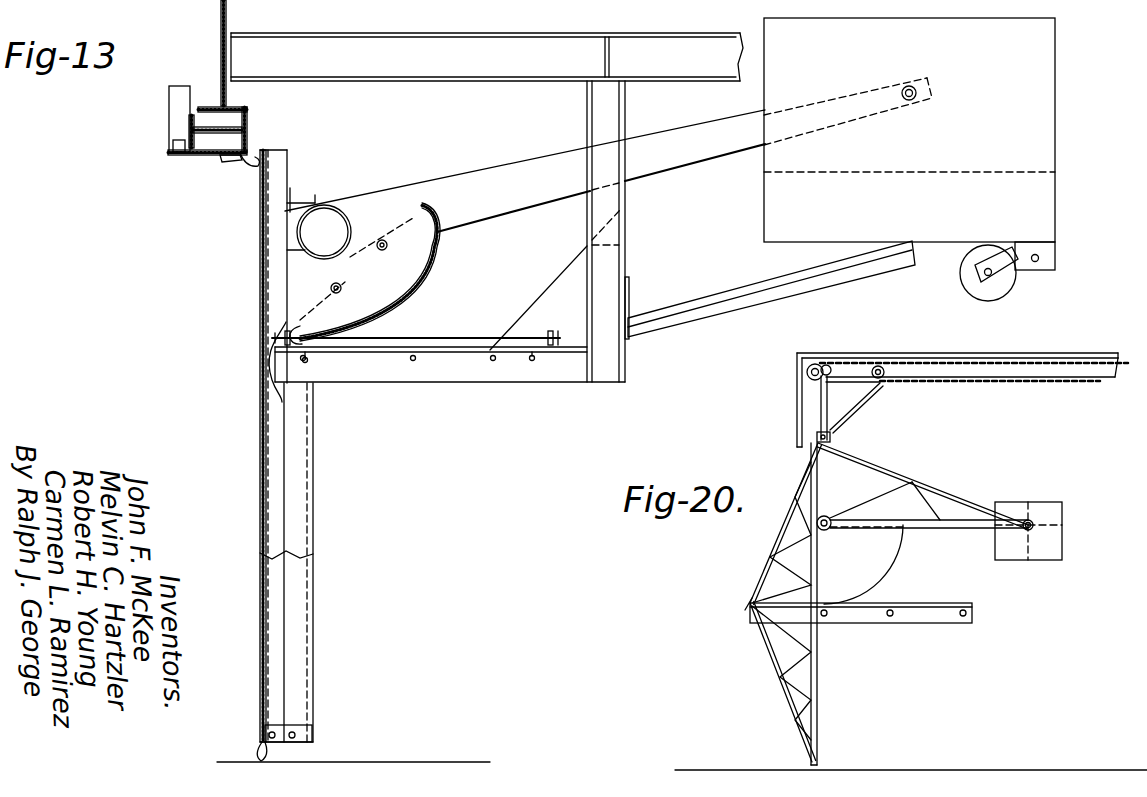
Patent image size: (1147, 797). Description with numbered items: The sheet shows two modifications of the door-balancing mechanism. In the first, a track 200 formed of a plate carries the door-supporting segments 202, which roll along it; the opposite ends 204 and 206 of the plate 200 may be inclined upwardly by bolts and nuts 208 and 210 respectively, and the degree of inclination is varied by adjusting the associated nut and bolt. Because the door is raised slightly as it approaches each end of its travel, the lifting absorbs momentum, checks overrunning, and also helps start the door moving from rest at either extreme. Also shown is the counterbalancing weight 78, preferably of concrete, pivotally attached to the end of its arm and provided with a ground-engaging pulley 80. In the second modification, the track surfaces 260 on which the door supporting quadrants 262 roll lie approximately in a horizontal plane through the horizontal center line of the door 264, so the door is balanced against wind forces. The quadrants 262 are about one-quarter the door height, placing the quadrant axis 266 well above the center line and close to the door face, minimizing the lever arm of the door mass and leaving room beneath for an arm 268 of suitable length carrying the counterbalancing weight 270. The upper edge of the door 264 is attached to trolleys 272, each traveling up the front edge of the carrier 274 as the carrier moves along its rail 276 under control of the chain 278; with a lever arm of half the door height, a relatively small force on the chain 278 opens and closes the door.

In FIG. 13, the counterbalancing weight 78 is at (1045, 152).
In FIG. 13, the ground-engaging pulley 80 is at (985, 290).
In FIG. 13, the track 200 is at (417, 346).
In FIG. 13, the door-supporting segment 202 is at (415, 272).
In FIG. 13, the end of plate 204 is at (322, 347).
In FIG. 13, the end of plate 206 is at (517, 347).
In FIG. 13, the bolt and nut 208 is at (303, 360).
In FIG. 13, the bolt and nut 210 is at (535, 360).
In FIG. 20, the track surface 260 is at (955, 605).
In FIG. 20, the door supporting quadrant 262 is at (893, 557).
In FIG. 20, the door 264 is at (760, 657).
In FIG. 20, the quadrant axis 266 is at (826, 515).
In FIG. 20, the arm 268 is at (952, 470).
In FIG. 20, the counterbalancing weight 270 is at (1065, 525).
In FIG. 20, the trolley 272 is at (818, 434).
In FIG. 20, the carrier 274 is at (857, 405).
In FIG. 20, the rail 276 is at (945, 338).
In FIG. 20, the chain 278 is at (1062, 385).